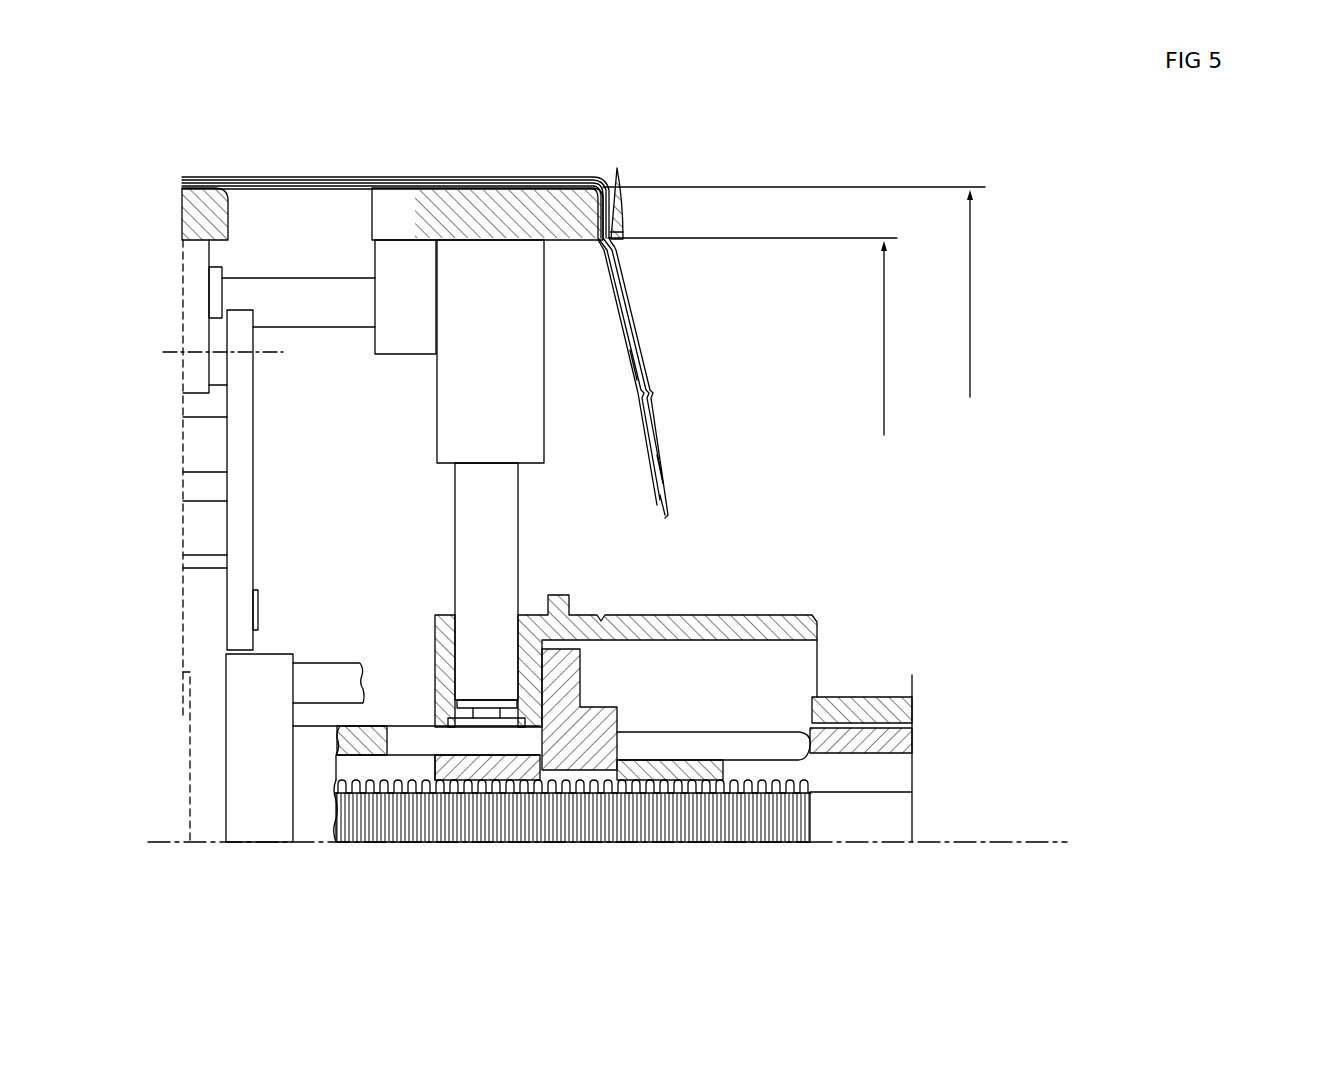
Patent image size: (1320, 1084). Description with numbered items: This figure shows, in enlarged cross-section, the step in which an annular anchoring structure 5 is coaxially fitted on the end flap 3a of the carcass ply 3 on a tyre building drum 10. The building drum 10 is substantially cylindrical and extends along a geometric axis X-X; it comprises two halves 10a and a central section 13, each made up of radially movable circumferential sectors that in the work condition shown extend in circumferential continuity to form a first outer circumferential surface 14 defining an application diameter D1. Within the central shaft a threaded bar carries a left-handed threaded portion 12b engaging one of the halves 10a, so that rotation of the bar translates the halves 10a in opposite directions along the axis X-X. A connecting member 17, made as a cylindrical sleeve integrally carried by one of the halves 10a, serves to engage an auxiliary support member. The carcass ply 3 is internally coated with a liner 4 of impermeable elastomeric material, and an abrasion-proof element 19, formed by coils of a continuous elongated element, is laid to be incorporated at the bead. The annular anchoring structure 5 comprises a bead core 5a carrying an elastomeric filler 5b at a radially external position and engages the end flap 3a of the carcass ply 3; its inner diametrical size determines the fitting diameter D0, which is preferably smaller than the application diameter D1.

The central section 13 is at (200, 200).
The liner 4 is at (260, 188).
The carcass ply 3 is at (345, 185).
The end flaps 3a is at (663, 495).
The first outer circumferential surface 14 is at (432, 200).
The halves 10a is at (503, 195).
The building drum 10 is at (557, 275).
The elastomeric filler 5b is at (618, 210).
The annular anchoring structure 5 is at (645, 203).
The bead core 5a is at (621, 228).
The abrasion-proof element 19 is at (632, 358).
The connecting member 17 is at (741, 628).
The threaded portion 12b is at (470, 817).
The application diameter D1 is at (970, 292).
The fitting diameter D0 is at (884, 389).
The geometric axis X-X is at (1002, 842).